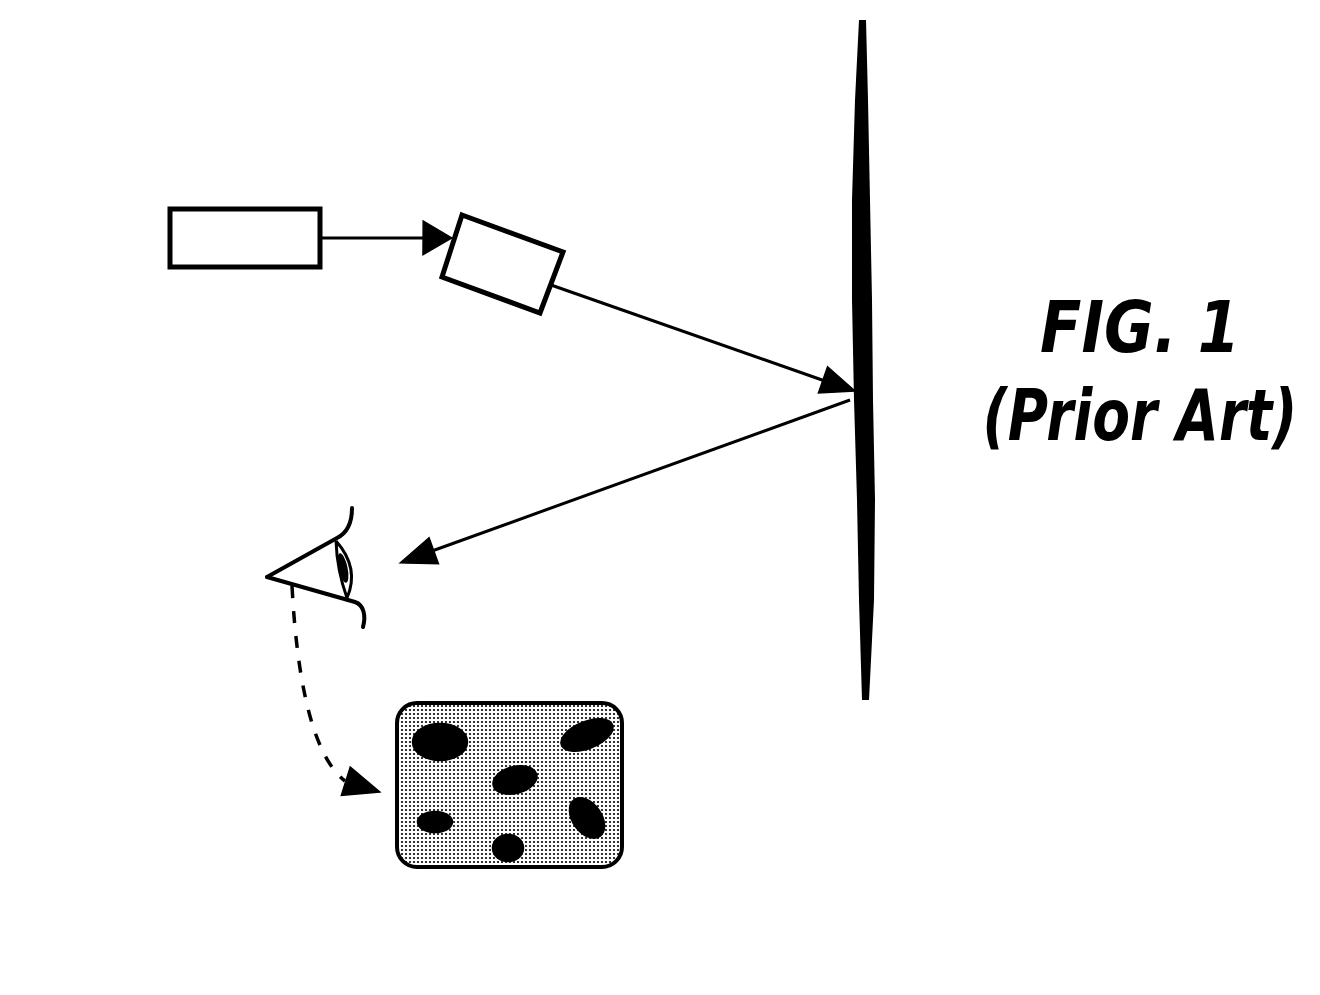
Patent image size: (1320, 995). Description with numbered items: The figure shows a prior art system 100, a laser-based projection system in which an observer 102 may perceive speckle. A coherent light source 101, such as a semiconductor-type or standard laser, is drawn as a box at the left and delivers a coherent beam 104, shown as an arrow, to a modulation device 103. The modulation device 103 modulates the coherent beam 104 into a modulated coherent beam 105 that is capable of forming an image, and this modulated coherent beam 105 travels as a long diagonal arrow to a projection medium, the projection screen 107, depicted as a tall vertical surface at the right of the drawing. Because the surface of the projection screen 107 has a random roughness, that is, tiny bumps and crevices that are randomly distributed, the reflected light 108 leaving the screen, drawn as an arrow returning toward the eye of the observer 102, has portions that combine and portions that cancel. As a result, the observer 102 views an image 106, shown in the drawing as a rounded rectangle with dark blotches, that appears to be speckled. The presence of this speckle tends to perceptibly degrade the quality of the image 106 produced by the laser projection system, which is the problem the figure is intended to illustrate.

The prior art system 100 is at (679, 234).
The coherent light source 101 is at (245, 237).
The observer 102 is at (298, 557).
The modulation device 103 is at (478, 247).
The coherent beam 104 is at (347, 241).
The modulated coherent beam 105 is at (655, 318).
The image 106 is at (622, 765).
The projection screen 107 is at (873, 528).
The reflected light 108 is at (670, 467).